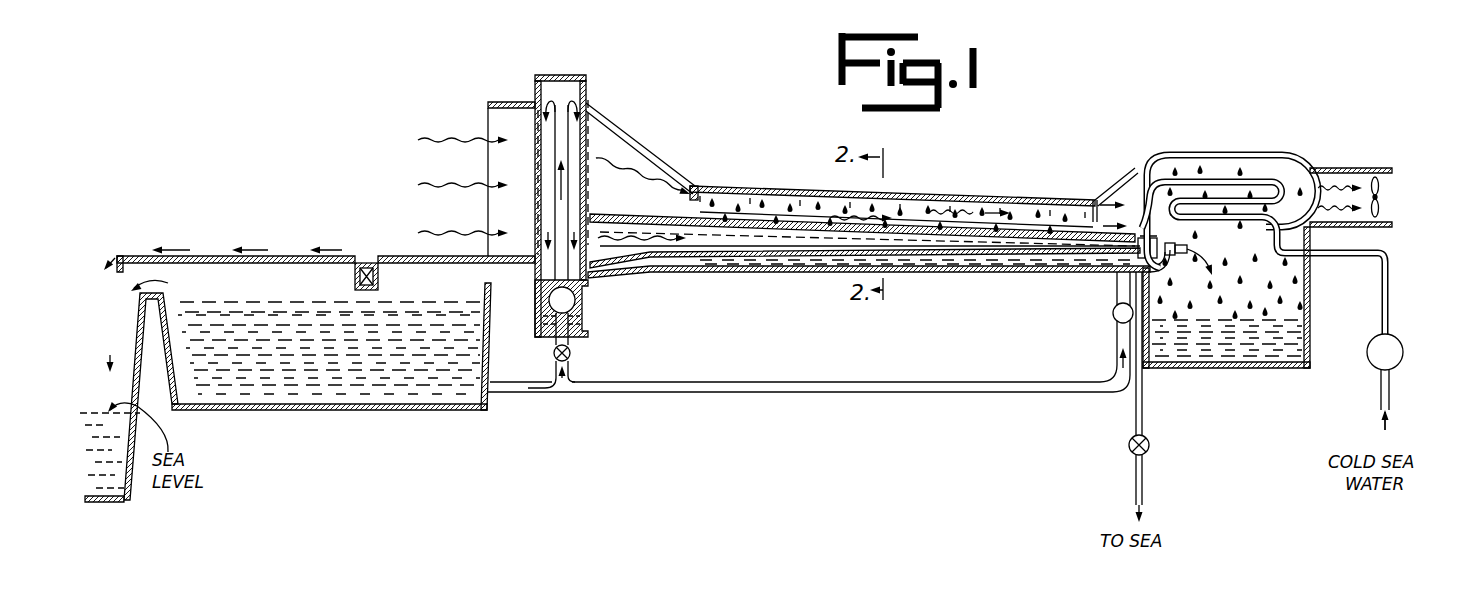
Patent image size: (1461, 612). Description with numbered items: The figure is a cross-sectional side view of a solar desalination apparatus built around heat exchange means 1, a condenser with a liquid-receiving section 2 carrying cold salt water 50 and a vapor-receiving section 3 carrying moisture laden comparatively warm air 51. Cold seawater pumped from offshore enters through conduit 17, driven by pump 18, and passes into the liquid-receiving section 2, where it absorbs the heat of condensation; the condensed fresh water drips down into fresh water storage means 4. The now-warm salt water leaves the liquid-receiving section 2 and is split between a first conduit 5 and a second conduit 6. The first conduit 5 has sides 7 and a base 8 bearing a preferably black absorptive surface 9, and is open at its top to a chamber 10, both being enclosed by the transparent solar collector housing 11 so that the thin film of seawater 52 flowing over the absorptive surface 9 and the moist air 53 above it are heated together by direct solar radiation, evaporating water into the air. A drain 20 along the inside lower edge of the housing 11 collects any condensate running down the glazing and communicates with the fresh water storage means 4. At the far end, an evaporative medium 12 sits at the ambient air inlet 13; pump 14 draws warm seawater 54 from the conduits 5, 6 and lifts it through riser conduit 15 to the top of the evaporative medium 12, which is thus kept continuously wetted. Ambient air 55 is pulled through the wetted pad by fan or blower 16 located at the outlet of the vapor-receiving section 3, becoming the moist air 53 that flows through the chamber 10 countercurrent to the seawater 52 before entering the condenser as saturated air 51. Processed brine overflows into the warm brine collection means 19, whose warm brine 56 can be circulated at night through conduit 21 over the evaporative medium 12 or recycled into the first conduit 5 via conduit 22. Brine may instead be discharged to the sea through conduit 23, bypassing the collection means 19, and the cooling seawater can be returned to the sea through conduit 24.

The heat exchange means 1 is at (1265, 137).
The liquid-receiving section 2 is at (1275, 168).
The vapor-receiving section 3 is at (1295, 165).
The fresh water storage means 4 is at (1292, 372).
The first conduit 5 is at (840, 252).
The second conduit 6 is at (997, 260).
The sides 7 is at (806, 212).
The base 8 is at (780, 262).
The absorptive surface 9 is at (813, 258).
The chamber 10 is at (1020, 223).
The solar collector housing 11 is at (985, 196).
The evaporative medium 12 is at (576, 60).
The ambient air inlet 13 is at (509, 125).
The pump 14 is at (583, 313).
The conduit 15 is at (575, 138).
The fan or blower 16 is at (1382, 190).
The conduit 17 is at (1390, 285).
The pump 18 is at (1398, 334).
The warm brine collection means 19 is at (361, 422).
The drain 20 is at (728, 218).
The conduit 21 is at (578, 350).
The conduit 22 is at (872, 382).
The conduit 23 is at (284, 242).
The conduit 24 is at (1143, 414).
The comparatively cold salt water 50 is at (1411, 429).
The moisture laden comparatively warm air 51 is at (1100, 192).
The first stream of salt water 52 is at (935, 255).
The flow of moist air 53 is at (950, 208).
The salt water of comparatively warm temperature 54 is at (900, 262).
The ambient air 55 is at (457, 133).
The warm brine 56 is at (467, 388).